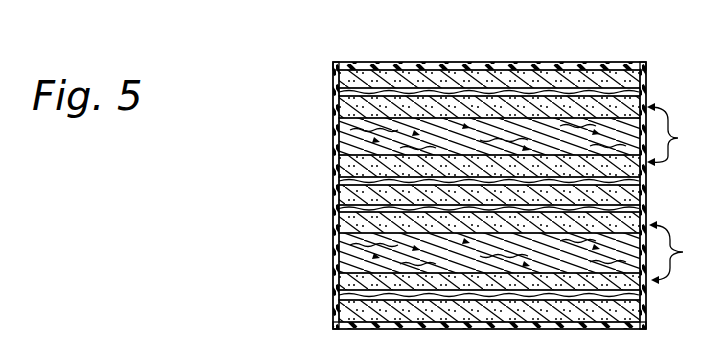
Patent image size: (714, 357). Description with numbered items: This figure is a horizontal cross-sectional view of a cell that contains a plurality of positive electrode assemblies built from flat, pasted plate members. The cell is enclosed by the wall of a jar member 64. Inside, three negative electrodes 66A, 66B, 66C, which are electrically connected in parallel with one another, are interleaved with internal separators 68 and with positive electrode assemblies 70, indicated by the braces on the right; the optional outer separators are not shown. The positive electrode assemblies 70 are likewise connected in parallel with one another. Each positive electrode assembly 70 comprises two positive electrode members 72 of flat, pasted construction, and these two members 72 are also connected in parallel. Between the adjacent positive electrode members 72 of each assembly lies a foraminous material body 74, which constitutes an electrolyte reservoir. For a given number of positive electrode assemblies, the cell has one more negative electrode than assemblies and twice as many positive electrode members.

The wall of a jar member 64 is at (645, 62).
The negative electrode 66A is at (352, 78).
The negative electrode 66B is at (350, 196).
The negative electrode 66C is at (348, 312).
The internal separator 68 is at (342, 92).
The positive electrode assembly 70 is at (678, 138).
The positive electrode member 72 is at (342, 107).
The foraminous material body 74 is at (345, 132).